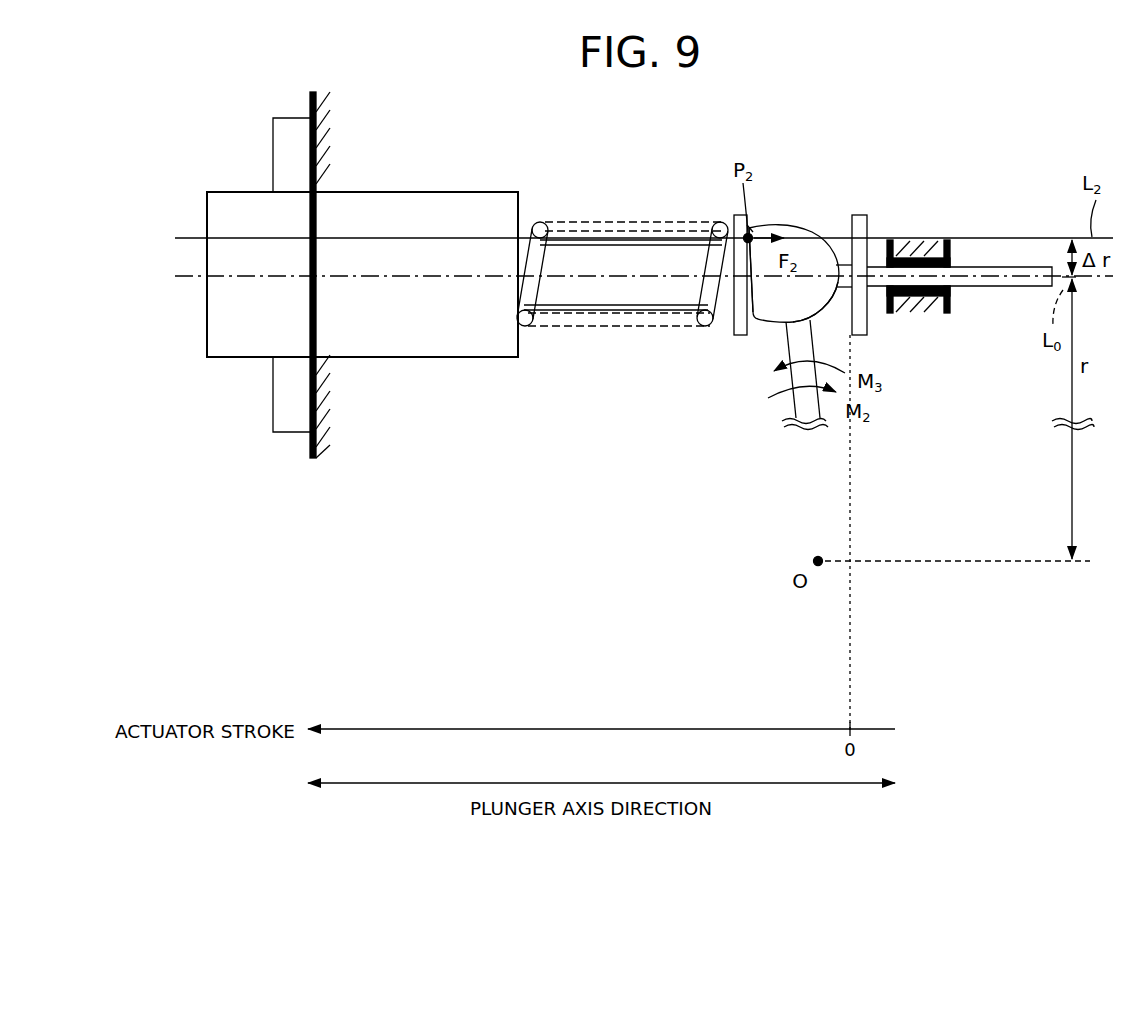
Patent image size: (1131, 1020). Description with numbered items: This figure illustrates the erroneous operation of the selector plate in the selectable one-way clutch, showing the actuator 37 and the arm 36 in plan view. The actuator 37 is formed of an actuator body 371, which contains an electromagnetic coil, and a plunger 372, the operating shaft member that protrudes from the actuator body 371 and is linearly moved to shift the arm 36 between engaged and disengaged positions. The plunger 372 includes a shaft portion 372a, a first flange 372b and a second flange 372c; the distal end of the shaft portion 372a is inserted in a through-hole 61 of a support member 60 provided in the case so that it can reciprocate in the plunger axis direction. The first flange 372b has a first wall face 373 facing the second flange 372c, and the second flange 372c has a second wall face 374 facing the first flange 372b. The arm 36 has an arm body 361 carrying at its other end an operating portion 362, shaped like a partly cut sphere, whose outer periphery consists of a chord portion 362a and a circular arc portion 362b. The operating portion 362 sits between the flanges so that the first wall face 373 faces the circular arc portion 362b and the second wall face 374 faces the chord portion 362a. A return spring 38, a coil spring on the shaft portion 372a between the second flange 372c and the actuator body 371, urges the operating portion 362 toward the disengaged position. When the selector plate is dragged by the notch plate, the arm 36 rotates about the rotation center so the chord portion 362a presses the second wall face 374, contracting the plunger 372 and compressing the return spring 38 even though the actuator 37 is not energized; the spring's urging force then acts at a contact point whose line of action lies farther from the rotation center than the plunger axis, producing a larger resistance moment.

The actuator 37 is at (200, 116).
The actuator body 371 is at (490, 192).
The plunger 372 is at (578, 252).
The return spring 38 is at (643, 222).
The shaft portion 372a is at (1008, 261).
The first flange 372b is at (862, 208).
The second flange 372c is at (733, 212).
The first wall face 373 is at (845, 222).
The second wall face 374 is at (757, 222).
The arm 36 is at (820, 271).
The arm body 361 is at (786, 406).
The operating portion 362 is at (812, 236).
The chord portion 362a is at (753, 318).
The circular arc portion 362b is at (831, 311).
The support member 60 is at (932, 274).
The through-hole 61 is at (958, 291).